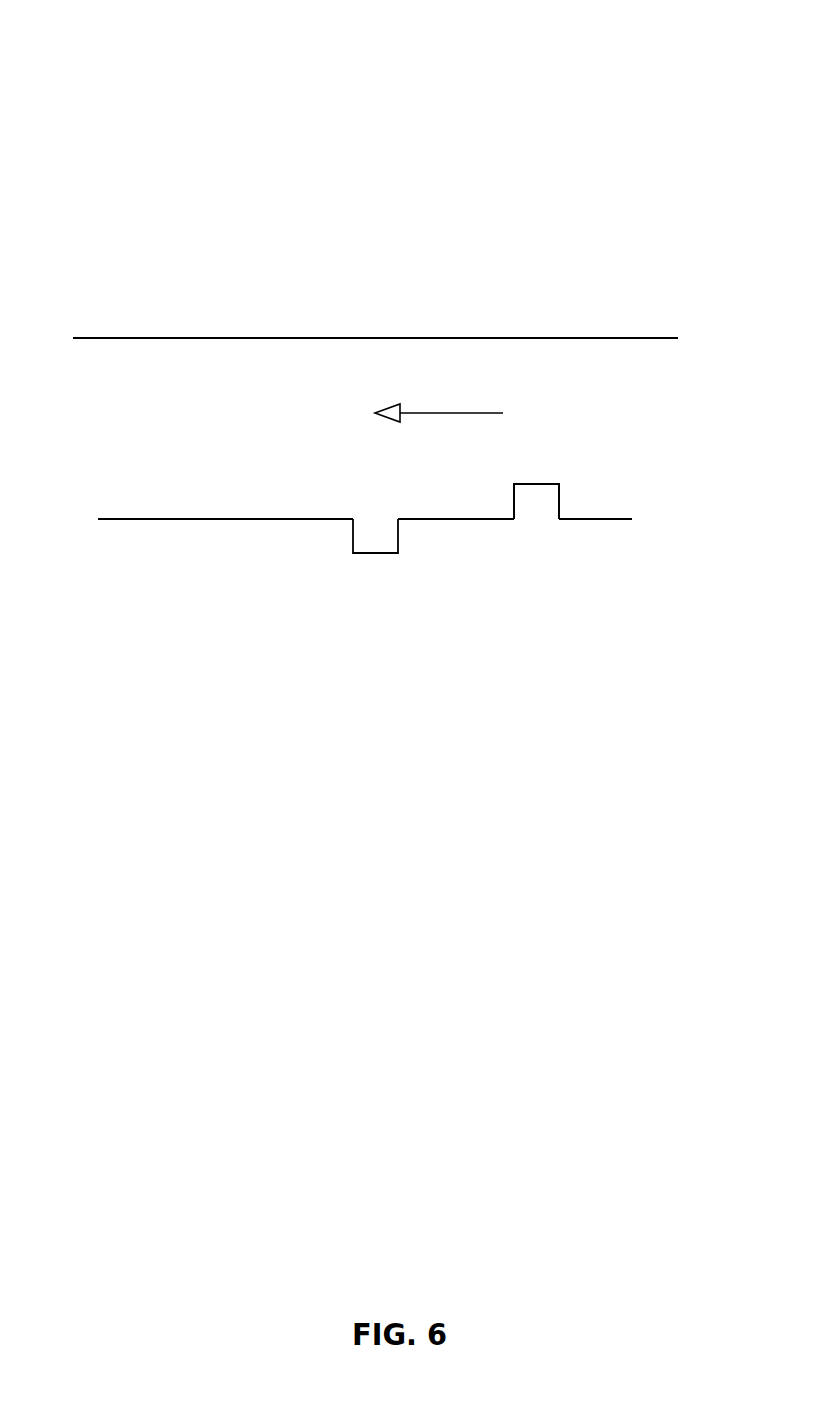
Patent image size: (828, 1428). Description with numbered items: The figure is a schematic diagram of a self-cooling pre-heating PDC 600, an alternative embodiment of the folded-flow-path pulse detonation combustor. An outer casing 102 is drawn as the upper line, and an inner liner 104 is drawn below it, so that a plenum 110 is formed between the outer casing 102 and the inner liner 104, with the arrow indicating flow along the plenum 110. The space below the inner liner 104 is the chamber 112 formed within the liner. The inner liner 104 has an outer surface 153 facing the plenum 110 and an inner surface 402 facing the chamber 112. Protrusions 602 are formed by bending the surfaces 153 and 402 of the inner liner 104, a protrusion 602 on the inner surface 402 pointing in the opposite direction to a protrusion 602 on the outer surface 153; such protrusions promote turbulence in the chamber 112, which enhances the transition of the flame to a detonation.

The self-cooling pre-heating PDC 600 is at (411, 100).
The outer casing 102 is at (164, 337).
The plenum 110 is at (253, 407).
The inner liner 104 is at (446, 519).
The chamber 112 is at (545, 542).
The outer surface 153 is at (168, 518).
The inner surface 402 is at (605, 519).
The protrusions 602 is at (537, 484).